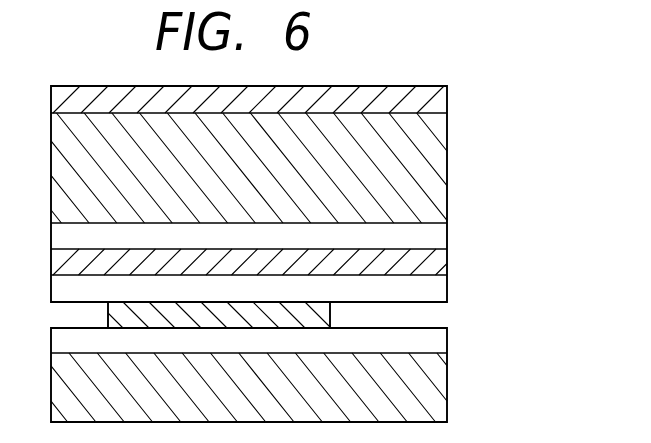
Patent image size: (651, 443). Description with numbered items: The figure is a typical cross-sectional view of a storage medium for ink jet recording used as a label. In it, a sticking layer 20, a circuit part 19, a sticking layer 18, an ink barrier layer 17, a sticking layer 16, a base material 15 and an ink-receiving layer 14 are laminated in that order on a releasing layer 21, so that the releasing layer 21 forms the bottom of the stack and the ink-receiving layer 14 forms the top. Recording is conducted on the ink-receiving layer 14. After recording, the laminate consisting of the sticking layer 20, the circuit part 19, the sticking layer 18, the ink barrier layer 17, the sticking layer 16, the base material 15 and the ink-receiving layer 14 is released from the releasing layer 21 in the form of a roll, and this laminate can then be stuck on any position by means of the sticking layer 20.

The ink-receiving layer 14 is at (438, 95).
The base material 15 is at (437, 160).
The sticking layer 16 is at (437, 233).
The ink barrier layer 17 is at (440, 262).
The sticking layer 18 is at (440, 290).
The circuit part 19 is at (317, 314).
The sticking layer 20 is at (437, 342).
The releasing layer 21 is at (437, 383).